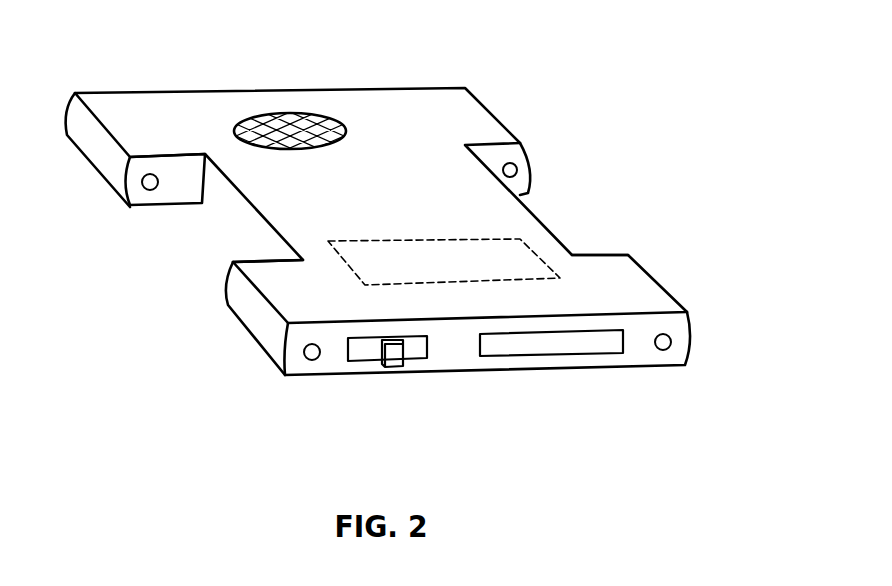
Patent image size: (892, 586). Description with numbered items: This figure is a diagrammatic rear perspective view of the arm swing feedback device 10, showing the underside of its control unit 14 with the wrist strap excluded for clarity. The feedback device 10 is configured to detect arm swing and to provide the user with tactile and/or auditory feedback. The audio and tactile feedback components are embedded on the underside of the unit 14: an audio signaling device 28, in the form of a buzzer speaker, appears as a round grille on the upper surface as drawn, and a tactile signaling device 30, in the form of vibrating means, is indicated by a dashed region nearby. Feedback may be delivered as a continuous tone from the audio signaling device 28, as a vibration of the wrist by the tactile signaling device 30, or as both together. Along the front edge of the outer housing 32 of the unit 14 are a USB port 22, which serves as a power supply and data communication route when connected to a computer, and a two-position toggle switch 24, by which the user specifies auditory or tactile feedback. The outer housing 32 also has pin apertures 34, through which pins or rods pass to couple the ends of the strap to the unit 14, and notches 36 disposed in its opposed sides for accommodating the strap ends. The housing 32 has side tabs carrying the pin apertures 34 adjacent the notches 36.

The feedback device 10 is at (405, 252).
The control unit 14 is at (447, 104).
The universal serial bus (USB) port 22 is at (563, 347).
The multi-position toggle switch 24 is at (397, 357).
The audio signaling device 28 is at (287, 128).
The tactile signaling device 30 is at (505, 250).
The outer housing 32 is at (220, 205).
The pin apertures 34 is at (150, 181).
The notches 36 is at (218, 245).